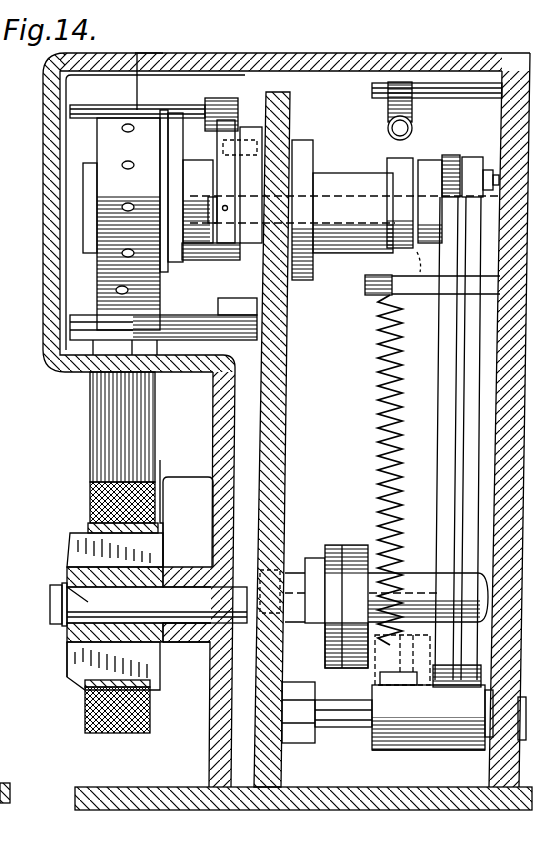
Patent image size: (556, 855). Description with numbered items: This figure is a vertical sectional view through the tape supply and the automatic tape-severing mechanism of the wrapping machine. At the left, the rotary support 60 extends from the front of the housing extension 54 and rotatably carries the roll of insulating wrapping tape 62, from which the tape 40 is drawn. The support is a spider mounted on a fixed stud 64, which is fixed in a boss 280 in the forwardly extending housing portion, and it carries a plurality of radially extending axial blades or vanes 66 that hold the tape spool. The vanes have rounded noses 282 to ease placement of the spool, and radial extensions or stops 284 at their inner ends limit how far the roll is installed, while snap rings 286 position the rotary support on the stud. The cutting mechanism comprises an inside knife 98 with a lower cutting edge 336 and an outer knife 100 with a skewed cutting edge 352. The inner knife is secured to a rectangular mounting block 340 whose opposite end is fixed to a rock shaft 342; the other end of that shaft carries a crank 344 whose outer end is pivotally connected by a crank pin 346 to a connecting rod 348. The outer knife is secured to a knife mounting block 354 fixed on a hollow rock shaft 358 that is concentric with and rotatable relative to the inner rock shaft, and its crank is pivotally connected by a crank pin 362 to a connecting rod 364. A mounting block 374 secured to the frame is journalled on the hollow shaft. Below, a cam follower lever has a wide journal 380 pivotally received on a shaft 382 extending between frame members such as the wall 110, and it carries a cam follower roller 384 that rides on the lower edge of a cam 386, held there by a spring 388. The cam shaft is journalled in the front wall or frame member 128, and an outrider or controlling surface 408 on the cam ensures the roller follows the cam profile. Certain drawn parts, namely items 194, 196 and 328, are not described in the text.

The tape 40 is at (90, 400).
The housing extension 54 is at (215, 414).
The rotary support 60 is at (60, 667).
The roll of insulating wrapping tape 62 is at (90, 492).
The fixed stud 64 is at (62, 588).
The blades or vanes 66 is at (143, 545).
The inside knife 98 is at (148, 113).
The outer knife 100 is at (182, 335).
The wall or frame member 110 is at (518, 460).
The front wall or frame member 128 is at (283, 444).
The bracket 194 is at (396, 668).
The screw 196 is at (428, 83).
The boss 280 is at (190, 637).
The rounded noses 282 is at (70, 538).
The radial extensions or stops 284 is at (160, 480).
The snap rings 286 is at (168, 575).
The drive assembly 328 is at (466, 753).
The lower cutting edge 336 is at (104, 118).
The mounting block 340 is at (250, 127).
The rock shaft 342 is at (343, 210).
The crank 344 is at (454, 160).
The crank pin 346 is at (496, 180).
The connecting rod 348 is at (467, 327).
The cutting edge 352 is at (170, 313).
The knife mounting block 354 is at (247, 275).
The hollow rock shaft 358 is at (318, 194).
The crank pin 362 is at (425, 165).
The connecting rod 364 is at (443, 372).
The mounting block 374 is at (398, 250).
The journal 380 is at (400, 742).
The shaft 382 is at (328, 727).
The cam follower roller 384 is at (346, 662).
The cam 386 is at (352, 543).
The spring 388 is at (380, 411).
The outrider or controlling surface 408 is at (343, 634).